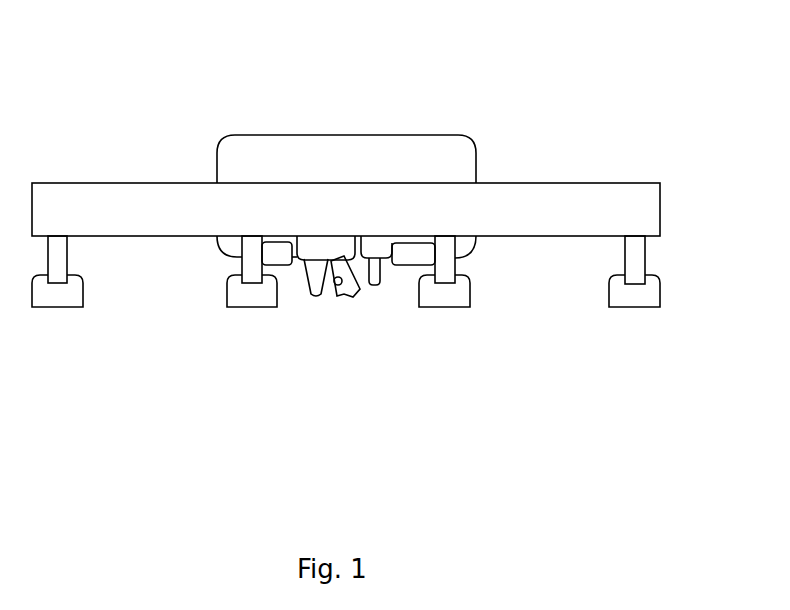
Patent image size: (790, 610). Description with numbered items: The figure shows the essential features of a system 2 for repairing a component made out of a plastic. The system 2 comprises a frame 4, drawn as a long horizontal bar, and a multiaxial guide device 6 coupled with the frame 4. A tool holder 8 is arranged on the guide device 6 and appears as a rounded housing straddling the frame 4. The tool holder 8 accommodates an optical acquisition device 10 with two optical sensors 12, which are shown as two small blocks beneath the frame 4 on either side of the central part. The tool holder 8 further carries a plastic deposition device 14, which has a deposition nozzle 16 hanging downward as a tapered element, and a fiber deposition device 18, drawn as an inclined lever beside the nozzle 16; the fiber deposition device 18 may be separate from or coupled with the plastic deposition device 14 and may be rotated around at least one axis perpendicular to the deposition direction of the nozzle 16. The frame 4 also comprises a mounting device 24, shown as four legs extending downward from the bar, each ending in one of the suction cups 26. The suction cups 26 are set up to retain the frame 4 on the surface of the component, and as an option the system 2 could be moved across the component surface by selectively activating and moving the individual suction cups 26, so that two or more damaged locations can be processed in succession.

The system 2 is at (397, 255).
The frame 4 is at (623, 201).
The multiaxial guide device 6 is at (383, 274).
The tool holder 8 is at (340, 157).
The optical acquisition device 10 is at (393, 374).
The optical sensors 12 is at (410, 257).
The plastic deposition device 14 is at (315, 243).
The deposition nozzle 16 is at (313, 290).
The fiber deposition device 18 is at (353, 293).
The mounting device 24 is at (681, 260).
The suction cups 26 is at (58, 290).